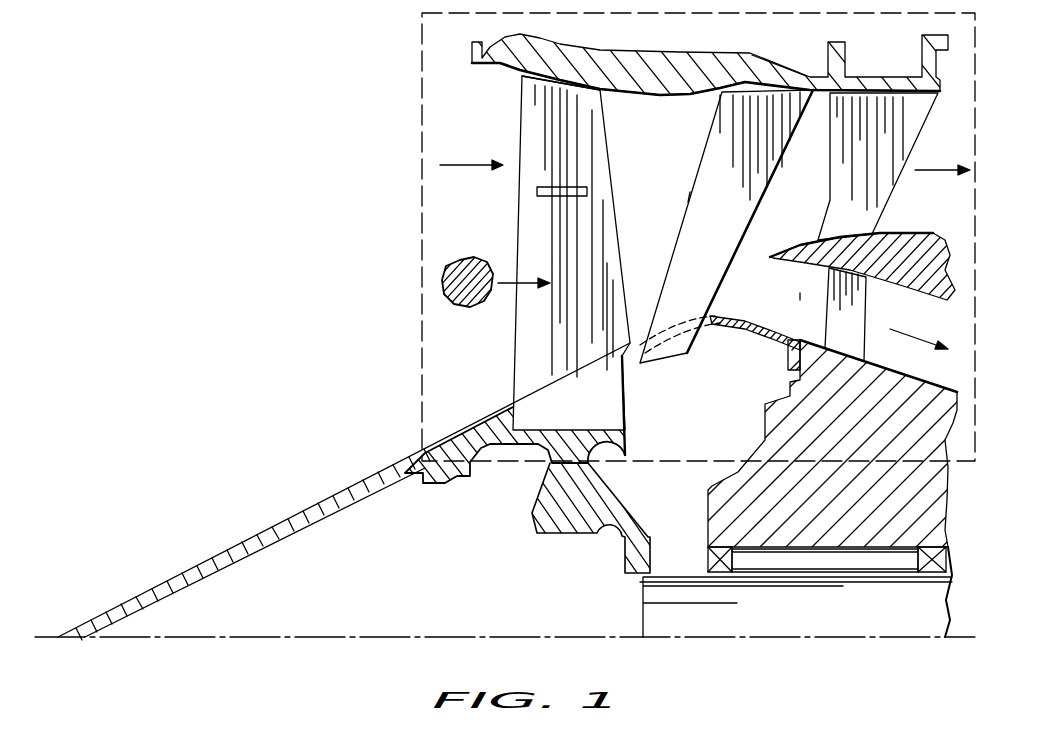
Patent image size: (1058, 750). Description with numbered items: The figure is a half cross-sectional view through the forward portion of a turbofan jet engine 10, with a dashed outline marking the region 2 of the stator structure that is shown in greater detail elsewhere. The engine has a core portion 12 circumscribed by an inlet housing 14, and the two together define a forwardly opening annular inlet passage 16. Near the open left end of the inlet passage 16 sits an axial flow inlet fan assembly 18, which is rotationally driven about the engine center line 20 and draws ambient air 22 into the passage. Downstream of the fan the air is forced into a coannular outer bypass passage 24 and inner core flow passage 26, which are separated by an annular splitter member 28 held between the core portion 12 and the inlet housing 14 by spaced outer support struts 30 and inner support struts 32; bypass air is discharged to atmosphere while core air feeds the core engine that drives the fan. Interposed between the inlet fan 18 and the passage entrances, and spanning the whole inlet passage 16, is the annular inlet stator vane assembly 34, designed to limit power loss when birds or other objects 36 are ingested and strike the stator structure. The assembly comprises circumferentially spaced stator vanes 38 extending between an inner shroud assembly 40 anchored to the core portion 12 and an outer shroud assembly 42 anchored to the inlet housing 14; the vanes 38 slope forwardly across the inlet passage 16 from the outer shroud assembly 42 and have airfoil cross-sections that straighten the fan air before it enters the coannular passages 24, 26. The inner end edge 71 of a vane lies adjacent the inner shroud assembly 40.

The section view area of FIG. 2 is at (421, 109).
The turbofan jet engine 10 is at (298, 465).
The core portion 12 is at (797, 562).
The inlet housing 14 is at (668, 57).
The inlet passage 16 is at (662, 151).
The axial flow inlet fan assembly 18 is at (500, 357).
The engine center line 20 is at (266, 637).
The ambient air 22 is at (454, 165).
The outer bypass passage 24 is at (810, 199).
The inner core flow passage 26 is at (800, 292).
The annular splitter member 28 is at (900, 271).
The outer support struts 30 is at (900, 123).
The inner support struts 32 is at (854, 343).
The inlet stator vane assembly 34 is at (680, 197).
The objects 36 is at (484, 258).
The stator vanes 38 is at (716, 243).
The inner shroud assembly 40 is at (757, 340).
The outer shroud assembly 42 is at (757, 66).
The inner end edge 71 is at (658, 365).